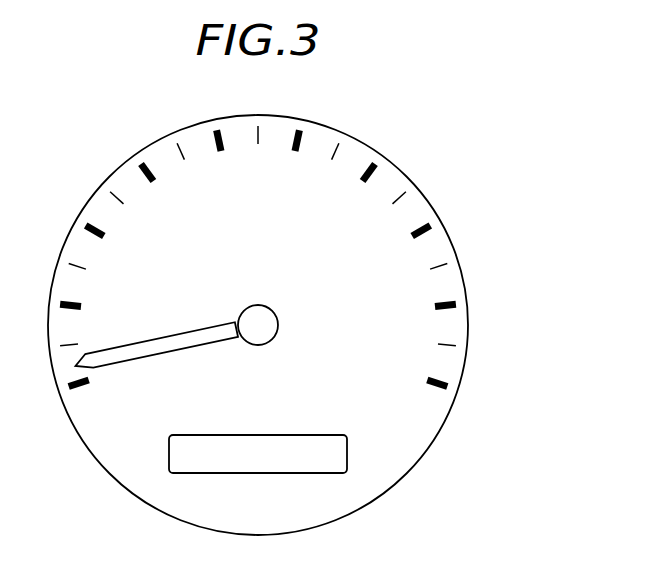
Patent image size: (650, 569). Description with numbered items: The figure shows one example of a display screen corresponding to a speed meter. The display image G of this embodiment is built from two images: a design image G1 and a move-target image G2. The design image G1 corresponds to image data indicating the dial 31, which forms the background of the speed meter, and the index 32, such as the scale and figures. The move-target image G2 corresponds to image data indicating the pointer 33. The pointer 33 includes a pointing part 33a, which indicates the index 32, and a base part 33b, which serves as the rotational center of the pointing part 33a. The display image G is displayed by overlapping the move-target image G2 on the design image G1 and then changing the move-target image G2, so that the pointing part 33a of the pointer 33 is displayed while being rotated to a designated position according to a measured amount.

The display image G is at (370, 135).
The design image G1 is at (467, 303).
The move-target image G2 is at (174, 352).
The dial 31 is at (410, 430).
The index 32 is at (387, 250).
The pointer 33 is at (274, 351).
The pointing part 33a is at (166, 342).
The base part 33b is at (268, 307).